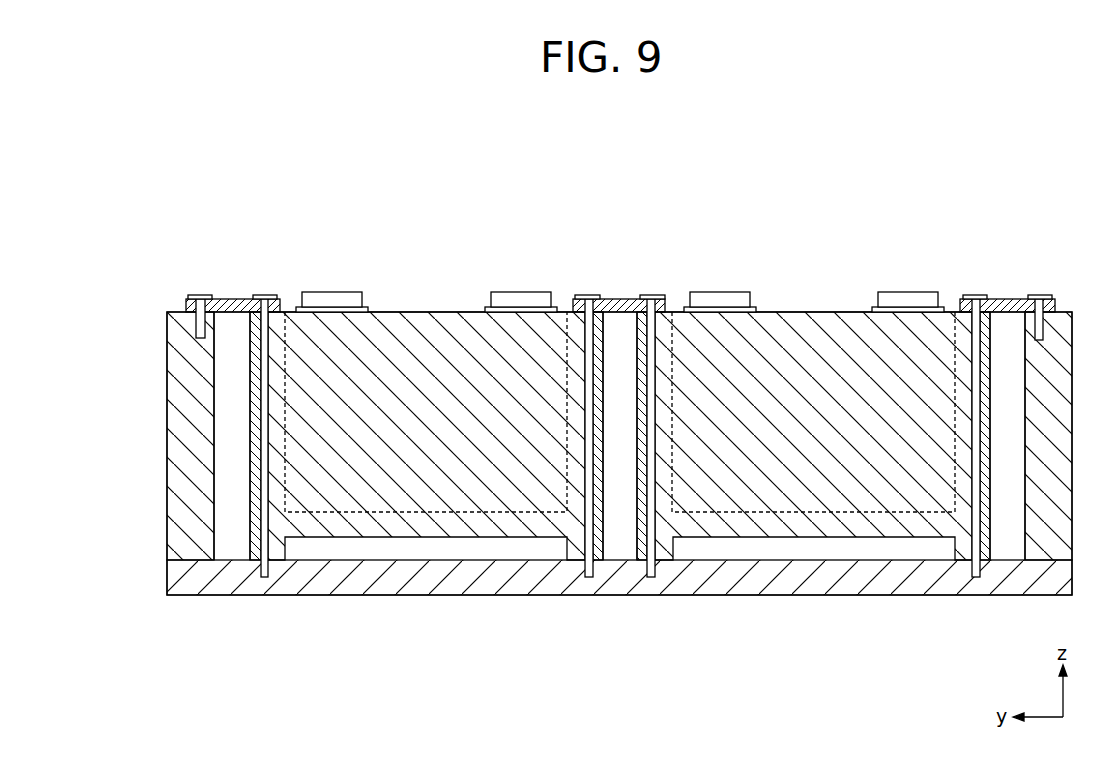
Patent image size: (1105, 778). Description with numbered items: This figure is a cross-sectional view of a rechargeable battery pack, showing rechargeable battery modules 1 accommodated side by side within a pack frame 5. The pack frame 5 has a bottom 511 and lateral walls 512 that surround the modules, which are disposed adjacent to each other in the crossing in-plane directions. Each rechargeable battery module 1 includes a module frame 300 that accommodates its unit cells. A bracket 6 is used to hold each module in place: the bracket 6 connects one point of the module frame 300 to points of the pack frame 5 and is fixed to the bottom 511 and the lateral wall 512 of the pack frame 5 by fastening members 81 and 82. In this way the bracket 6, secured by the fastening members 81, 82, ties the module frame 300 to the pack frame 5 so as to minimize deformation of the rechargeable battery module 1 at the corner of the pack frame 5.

The rechargeable battery module 1 is at (430, 300).
The pack frame 5 is at (569, 471).
The bottom 511 is at (300, 577).
The lateral wall 512 is at (585, 436).
The bracket 6 is at (232, 305).
The fastening member 81 is at (263, 296).
The fastening member 82 is at (199, 296).
The module frame 300 is at (637, 497).